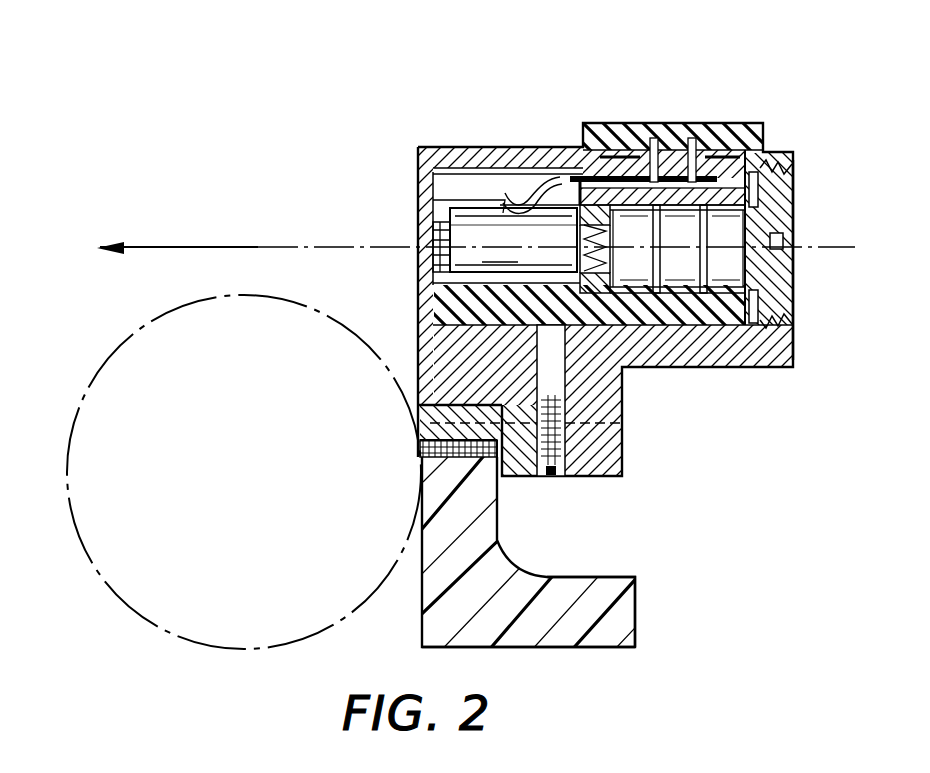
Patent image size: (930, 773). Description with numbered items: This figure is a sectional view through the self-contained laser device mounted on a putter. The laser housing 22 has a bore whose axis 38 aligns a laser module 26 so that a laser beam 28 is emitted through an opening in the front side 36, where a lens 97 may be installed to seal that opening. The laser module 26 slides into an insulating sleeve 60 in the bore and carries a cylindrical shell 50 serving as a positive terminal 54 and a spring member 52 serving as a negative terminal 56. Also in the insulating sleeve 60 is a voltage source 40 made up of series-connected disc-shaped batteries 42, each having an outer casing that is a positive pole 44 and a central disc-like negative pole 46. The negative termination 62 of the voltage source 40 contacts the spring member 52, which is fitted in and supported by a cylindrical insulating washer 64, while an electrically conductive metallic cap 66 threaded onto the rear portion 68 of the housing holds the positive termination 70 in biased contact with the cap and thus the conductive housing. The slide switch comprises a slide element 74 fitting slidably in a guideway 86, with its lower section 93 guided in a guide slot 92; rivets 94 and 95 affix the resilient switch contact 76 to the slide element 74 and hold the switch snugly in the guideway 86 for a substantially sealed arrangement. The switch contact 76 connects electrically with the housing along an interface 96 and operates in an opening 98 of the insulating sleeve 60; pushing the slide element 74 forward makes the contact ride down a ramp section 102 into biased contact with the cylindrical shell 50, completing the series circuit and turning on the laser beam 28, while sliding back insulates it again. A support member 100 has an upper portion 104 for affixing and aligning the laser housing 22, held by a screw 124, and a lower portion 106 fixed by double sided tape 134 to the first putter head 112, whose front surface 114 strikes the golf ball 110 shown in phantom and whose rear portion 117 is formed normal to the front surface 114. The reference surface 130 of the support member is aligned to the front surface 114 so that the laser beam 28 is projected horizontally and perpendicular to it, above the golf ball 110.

The laser housing 22 is at (420, 150).
The laser module 26 is at (440, 290).
The laser beam 28 is at (141, 245).
The front side 36 is at (425, 210).
The axis 38 is at (216, 245).
The voltage source 40 is at (770, 310).
The battery 42 is at (748, 250).
The positive pole 44 is at (752, 204).
The negative pole 46 is at (756, 330).
The cylindrical shell 50 is at (470, 305).
The spring member 52 is at (515, 238).
The positive terminal 54 is at (513, 237).
The negative terminal 56 is at (685, 340).
The insulating sleeve 60 is at (450, 350).
The negative termination 62 is at (662, 330).
The cylindrical insulating washer 64 is at (625, 330).
The electrically conductive metallic cap 66 is at (800, 262).
The rear portion 68 is at (795, 150).
The positive termination 70 is at (760, 225).
The slide element 74 is at (746, 135).
The switch contact 76 is at (545, 172).
The guideway 86 is at (540, 165).
The guide slot 92 is at (618, 170).
The lower section 93 is at (775, 140).
The first rivet 94 is at (660, 150).
The second rivet 95 is at (698, 150).
The interface 96 is at (585, 222).
The lens 97 is at (432, 252).
The opening 98 is at (435, 178).
The support member 100 is at (622, 452).
The ramp section 102 is at (503, 213).
The upper portion 104 is at (422, 426).
The lower portion 106 is at (515, 465).
The golf ball 110 is at (128, 337).
The first putter head 112 is at (425, 566).
The front surface 114 is at (440, 622).
The rear portion 117 is at (635, 613).
The screw 124 is at (574, 478).
The reference surface 130 is at (422, 440).
The double sided tape 134 is at (425, 480).